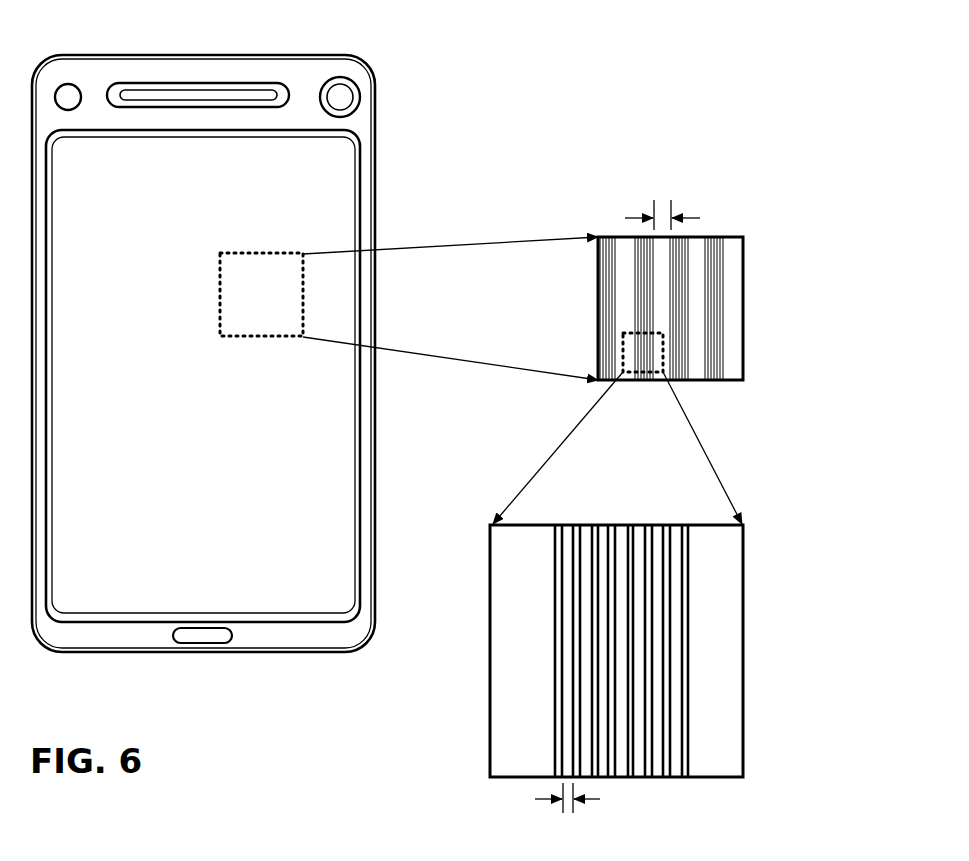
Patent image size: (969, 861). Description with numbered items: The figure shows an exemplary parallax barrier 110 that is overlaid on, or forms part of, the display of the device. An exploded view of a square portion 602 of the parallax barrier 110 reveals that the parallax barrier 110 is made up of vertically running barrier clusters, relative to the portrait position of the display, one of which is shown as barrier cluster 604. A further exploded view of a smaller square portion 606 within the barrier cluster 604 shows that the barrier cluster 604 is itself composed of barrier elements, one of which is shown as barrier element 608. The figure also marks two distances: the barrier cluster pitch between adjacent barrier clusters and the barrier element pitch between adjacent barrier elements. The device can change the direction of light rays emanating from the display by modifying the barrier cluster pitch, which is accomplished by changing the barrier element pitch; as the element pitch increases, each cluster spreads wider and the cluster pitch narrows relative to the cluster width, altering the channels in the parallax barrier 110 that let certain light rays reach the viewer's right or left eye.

The parallax barrier 110 is at (117, 165).
The square portion 602 is at (262, 253).
The barrier cluster 604 is at (632, 250).
The square portion 606 is at (620, 352).
The barrier element 608 is at (628, 525).